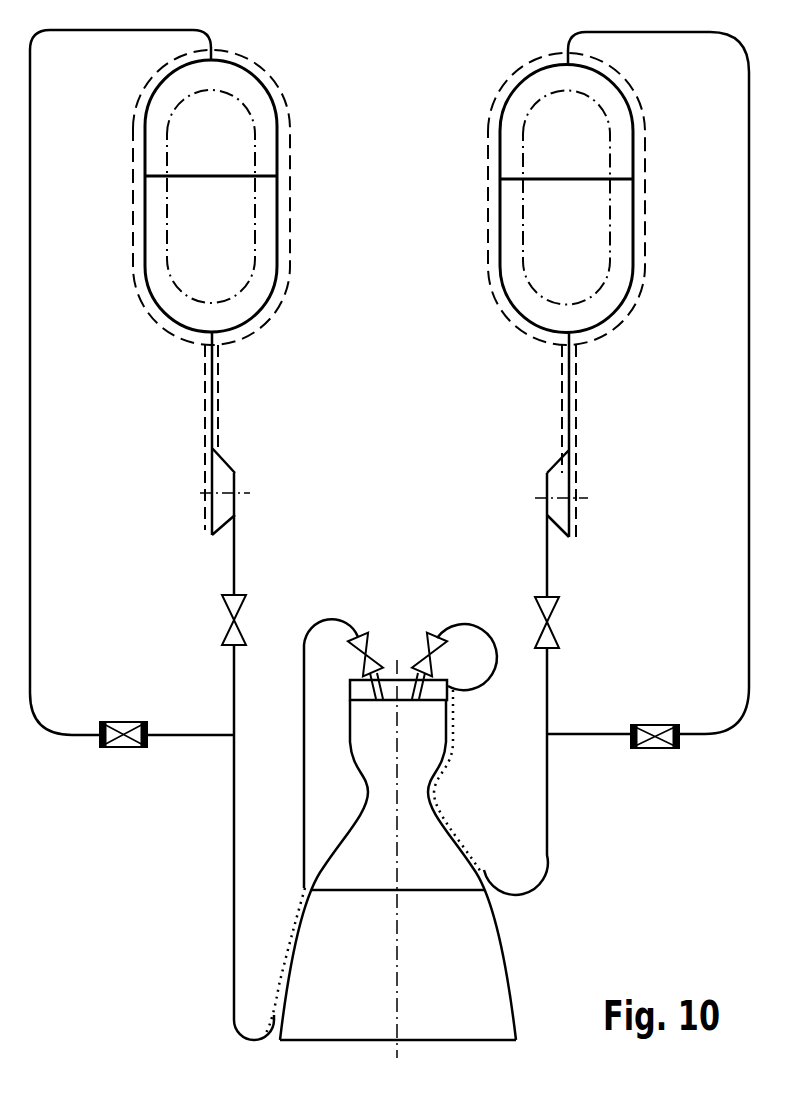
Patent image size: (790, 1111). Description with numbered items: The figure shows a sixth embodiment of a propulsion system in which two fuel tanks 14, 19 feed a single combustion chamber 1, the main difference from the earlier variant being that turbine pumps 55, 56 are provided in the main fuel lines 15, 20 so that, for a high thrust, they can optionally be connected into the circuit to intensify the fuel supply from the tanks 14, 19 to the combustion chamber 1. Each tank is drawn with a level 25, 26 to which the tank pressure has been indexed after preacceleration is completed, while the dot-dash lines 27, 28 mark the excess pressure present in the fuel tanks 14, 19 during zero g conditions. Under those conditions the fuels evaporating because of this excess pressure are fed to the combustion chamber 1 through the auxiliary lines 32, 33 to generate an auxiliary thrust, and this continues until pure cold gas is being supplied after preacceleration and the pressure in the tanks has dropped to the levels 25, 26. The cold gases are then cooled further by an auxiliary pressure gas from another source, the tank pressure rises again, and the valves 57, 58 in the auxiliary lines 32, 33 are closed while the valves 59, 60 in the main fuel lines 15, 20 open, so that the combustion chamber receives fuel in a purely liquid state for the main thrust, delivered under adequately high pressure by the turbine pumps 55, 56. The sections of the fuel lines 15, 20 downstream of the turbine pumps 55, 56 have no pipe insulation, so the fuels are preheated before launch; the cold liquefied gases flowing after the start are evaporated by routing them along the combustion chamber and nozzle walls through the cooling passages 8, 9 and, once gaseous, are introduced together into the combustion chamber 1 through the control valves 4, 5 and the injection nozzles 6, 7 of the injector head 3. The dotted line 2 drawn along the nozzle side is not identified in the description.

The combustion chamber 1 is at (456, 738).
The cooling jacket (nozzle side) 2 is at (285, 957).
The injector head 3 is at (449, 688).
The control valve 4 is at (362, 637).
The control valve 5 is at (437, 637).
The injection nozzle 6 is at (378, 700).
The injection nozzle 7 is at (412, 700).
The cooling passage 8 is at (443, 818).
The cooling passage 9 is at (293, 955).
The fuel tank 14 is at (145, 252).
The main fuel line 15 is at (213, 447).
The fuel tank 19 is at (633, 268).
The main fuel line 20 is at (571, 430).
The level 25 is at (212, 176).
The level 26 is at (570, 179).
The dot-dash line 27 is at (255, 243).
The dot-dash line 28 is at (612, 237).
The auxiliary line 32 is at (31, 432).
The auxiliary line 33 is at (749, 350).
The turbine pump 55 is at (222, 503).
The turbine pump 56 is at (560, 507).
The valve 57 is at (130, 750).
The valve 58 is at (660, 750).
The valve 59 is at (237, 621).
The valve 60 is at (552, 623).